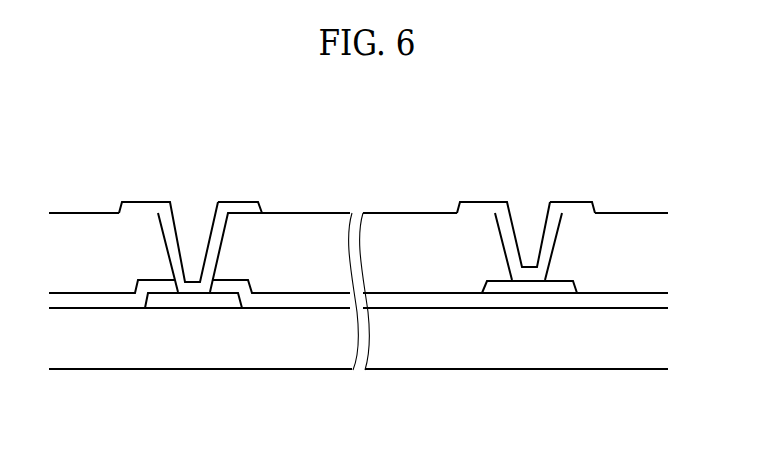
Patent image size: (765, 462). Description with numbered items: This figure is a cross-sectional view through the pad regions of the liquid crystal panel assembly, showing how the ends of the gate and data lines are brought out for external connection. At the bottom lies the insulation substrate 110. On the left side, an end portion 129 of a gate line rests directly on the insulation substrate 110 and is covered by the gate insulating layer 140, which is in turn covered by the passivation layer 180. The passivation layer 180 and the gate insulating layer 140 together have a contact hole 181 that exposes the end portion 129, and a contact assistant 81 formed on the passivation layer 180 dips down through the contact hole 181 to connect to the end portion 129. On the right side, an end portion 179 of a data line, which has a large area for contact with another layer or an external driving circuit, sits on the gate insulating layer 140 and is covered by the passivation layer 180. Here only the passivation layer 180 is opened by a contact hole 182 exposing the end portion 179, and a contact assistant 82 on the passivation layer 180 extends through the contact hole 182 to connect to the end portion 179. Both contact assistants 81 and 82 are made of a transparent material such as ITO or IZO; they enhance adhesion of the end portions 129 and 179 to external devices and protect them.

The insulation substrate 110 is at (143, 340).
The end portion of gate line 129 is at (192, 300).
The end portion of data line 179 is at (515, 290).
The gate insulating layer 140 is at (262, 300).
The passivation layer 180 is at (88, 257).
The contact hole 181 is at (167, 237).
The contact assistant 81 is at (237, 207).
The contact hole 182 is at (498, 228).
The contact assistant 82 is at (571, 207).